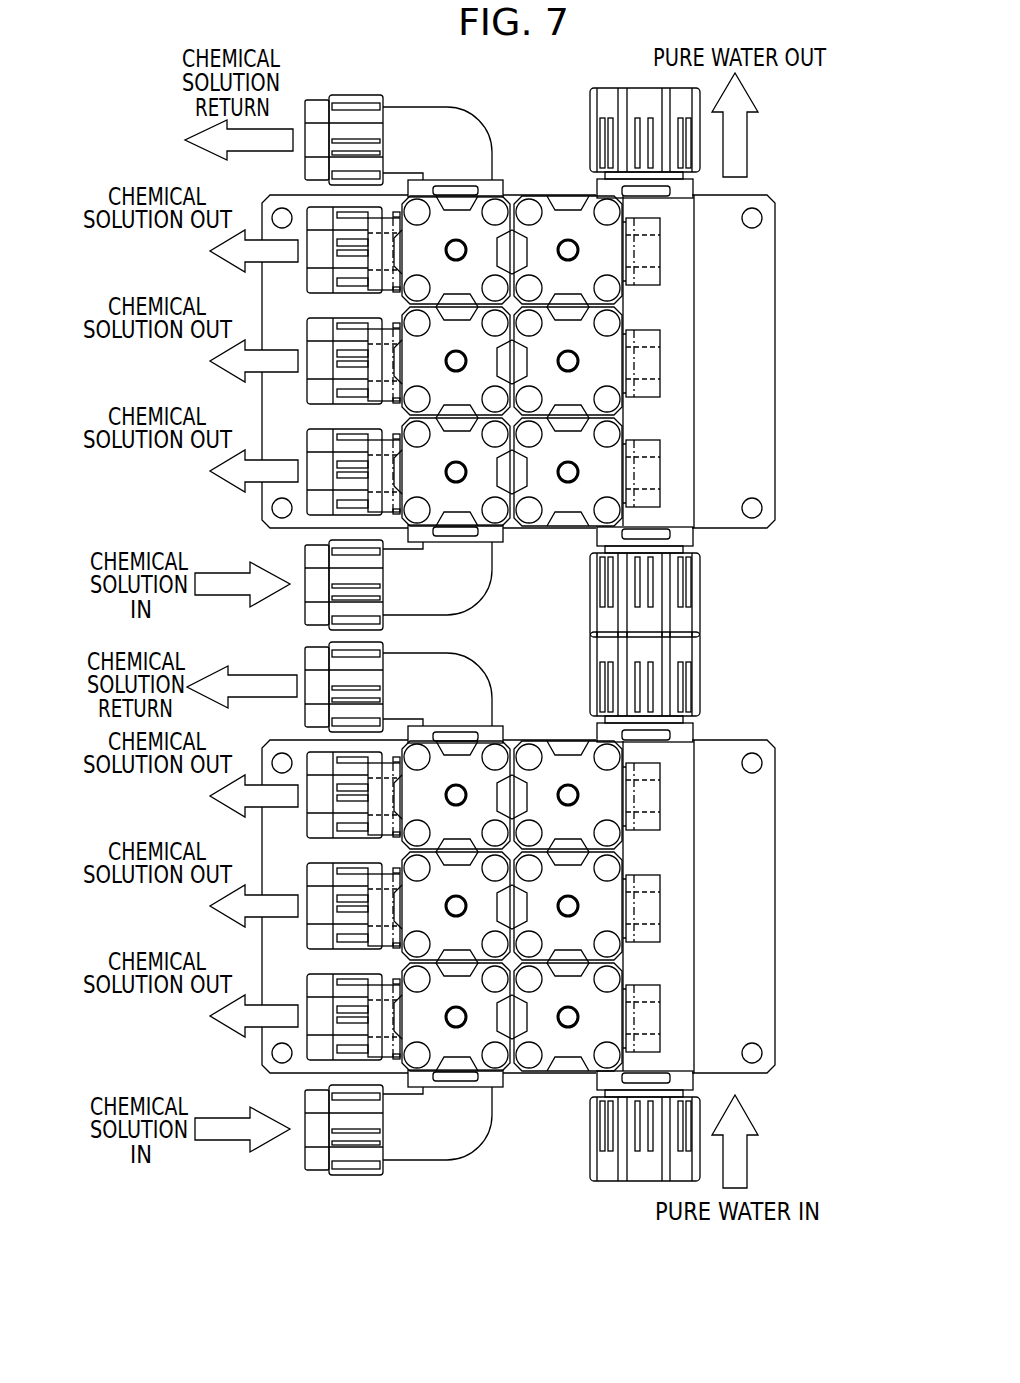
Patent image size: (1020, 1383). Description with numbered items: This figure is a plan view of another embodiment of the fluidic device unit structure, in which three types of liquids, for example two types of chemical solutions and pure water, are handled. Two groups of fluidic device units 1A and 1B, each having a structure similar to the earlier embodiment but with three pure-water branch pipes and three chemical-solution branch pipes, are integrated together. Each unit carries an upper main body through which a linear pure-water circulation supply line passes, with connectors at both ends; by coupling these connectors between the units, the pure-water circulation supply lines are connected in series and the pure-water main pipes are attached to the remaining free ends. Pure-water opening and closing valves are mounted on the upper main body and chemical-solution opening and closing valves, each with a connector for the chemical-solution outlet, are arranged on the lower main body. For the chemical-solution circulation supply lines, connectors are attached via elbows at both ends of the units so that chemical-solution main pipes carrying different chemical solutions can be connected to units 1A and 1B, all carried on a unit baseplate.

The fluidic device unit 1A is at (788, 174).
The fluidic device unit 1B is at (790, 740).